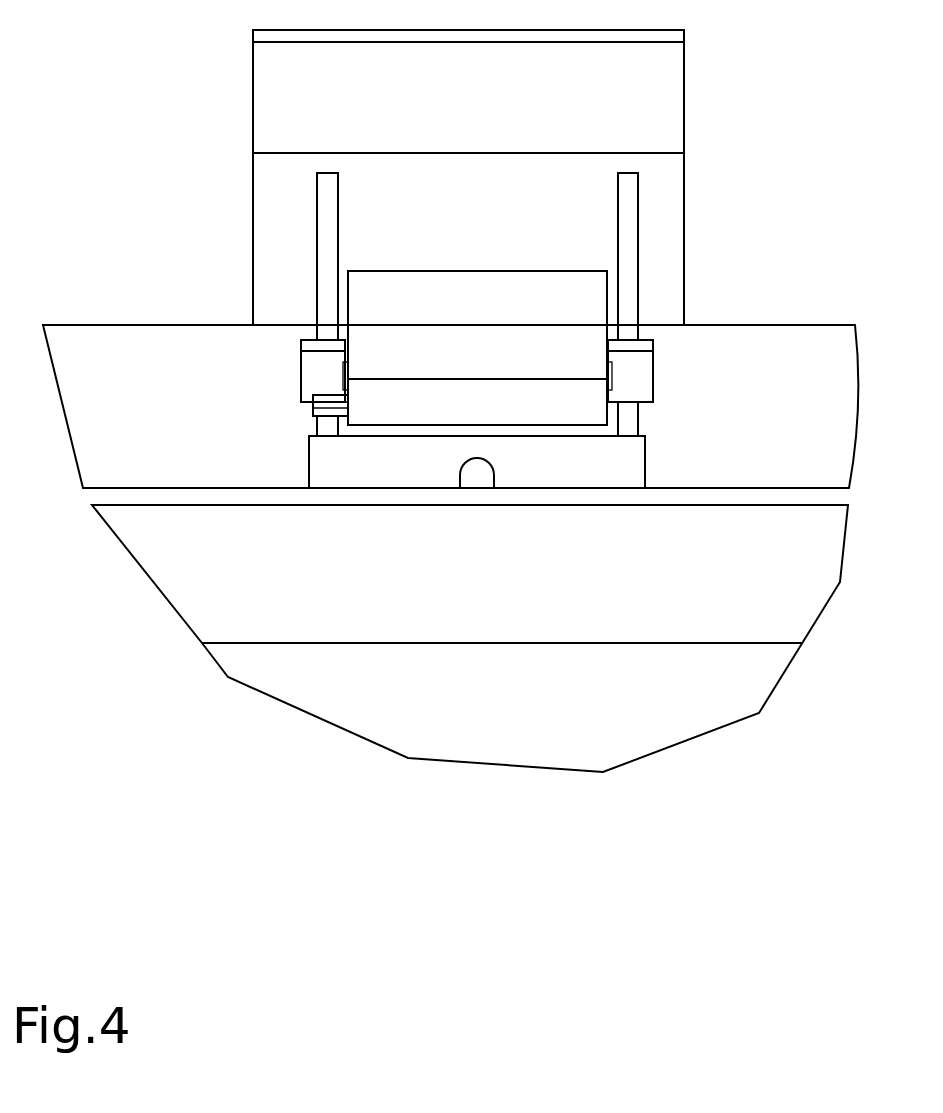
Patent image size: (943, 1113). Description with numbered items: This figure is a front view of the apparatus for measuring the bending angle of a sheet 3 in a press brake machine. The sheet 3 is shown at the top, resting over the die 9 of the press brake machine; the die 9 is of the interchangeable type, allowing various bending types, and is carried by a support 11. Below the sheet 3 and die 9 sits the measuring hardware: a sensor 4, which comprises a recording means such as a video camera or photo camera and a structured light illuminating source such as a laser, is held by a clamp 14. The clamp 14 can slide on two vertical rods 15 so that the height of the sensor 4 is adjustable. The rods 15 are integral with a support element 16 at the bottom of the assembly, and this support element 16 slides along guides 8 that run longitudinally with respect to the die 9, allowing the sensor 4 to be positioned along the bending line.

The sheet 3 is at (663, 109).
The sensor 4 is at (509, 300).
The guides 8 is at (773, 497).
The die 9 is at (670, 278).
The support 11 is at (812, 345).
The clamp 14 is at (653, 370).
The rods 15 is at (623, 214).
The support element 16 is at (645, 459).